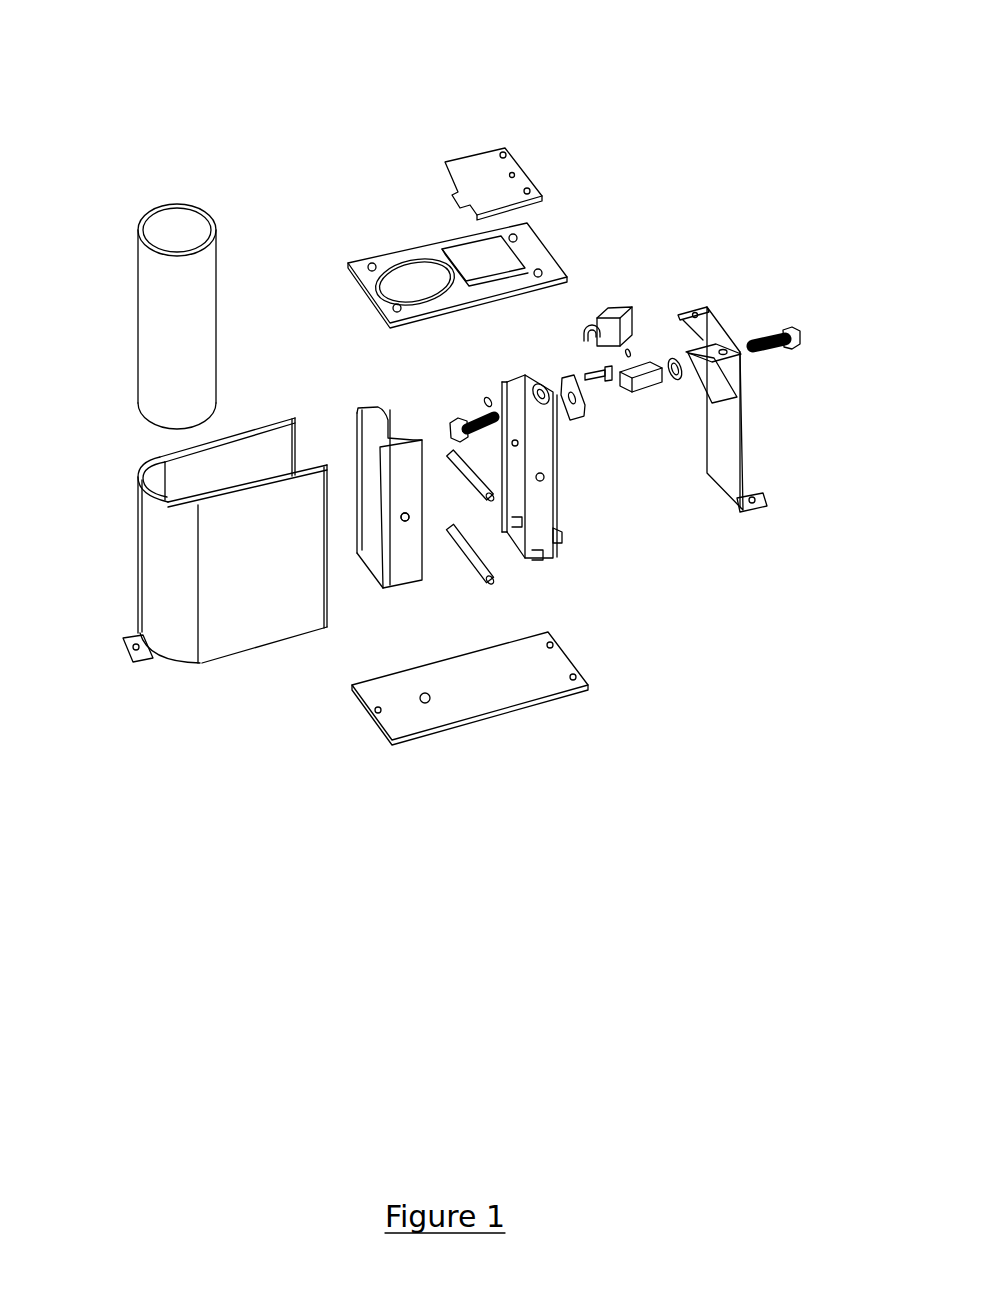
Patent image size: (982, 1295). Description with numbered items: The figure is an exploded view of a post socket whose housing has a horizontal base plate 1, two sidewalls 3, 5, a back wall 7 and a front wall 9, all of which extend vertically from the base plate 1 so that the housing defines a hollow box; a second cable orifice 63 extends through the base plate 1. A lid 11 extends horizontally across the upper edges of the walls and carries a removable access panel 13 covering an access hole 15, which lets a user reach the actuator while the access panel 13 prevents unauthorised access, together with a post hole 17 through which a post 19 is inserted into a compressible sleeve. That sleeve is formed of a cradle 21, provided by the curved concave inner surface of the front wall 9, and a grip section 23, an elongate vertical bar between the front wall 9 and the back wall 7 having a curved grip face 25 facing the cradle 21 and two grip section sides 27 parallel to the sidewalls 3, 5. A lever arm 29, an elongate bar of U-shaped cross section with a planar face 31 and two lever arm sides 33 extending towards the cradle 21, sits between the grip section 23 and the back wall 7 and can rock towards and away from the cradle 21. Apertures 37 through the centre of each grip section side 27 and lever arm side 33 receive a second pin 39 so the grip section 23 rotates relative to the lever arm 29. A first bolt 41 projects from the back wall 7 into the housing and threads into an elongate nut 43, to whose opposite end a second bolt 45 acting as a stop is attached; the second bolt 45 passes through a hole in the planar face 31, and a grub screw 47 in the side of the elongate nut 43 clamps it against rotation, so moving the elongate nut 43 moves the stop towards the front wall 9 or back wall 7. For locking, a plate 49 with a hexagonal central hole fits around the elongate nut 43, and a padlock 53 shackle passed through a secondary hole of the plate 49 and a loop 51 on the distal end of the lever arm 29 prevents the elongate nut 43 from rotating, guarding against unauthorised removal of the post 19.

The horizontal base plate 1 is at (424, 739).
The sidewall 3 is at (275, 615).
The sidewall 5 is at (223, 460).
The back wall 7 is at (743, 453).
The front wall 9 is at (173, 615).
The lid 11 is at (377, 173).
The removable access panel 13 is at (465, 173).
The access hole 15 is at (493, 257).
The post hole 17 is at (388, 283).
The post 19 is at (157, 353).
The cradle 21 is at (142, 485).
The grip section 23 is at (329, 496).
The grip face 25 is at (368, 525).
The grip section sides 27 is at (389, 394).
The lever arm 29 is at (557, 517).
The planar face 31 is at (543, 465).
The lever arm sides 33 is at (527, 567).
The apertures 37 is at (541, 496).
The second pin 39 is at (453, 450).
The first bolt 41 is at (768, 335).
The elongate nut 43 is at (650, 363).
The second bolt 45 is at (474, 412).
The grub screw 47 is at (628, 353).
The plate 49 is at (568, 375).
The loop 51 is at (537, 380).
The padlock 53 is at (612, 323).
The second cable orifice 63 is at (430, 700).